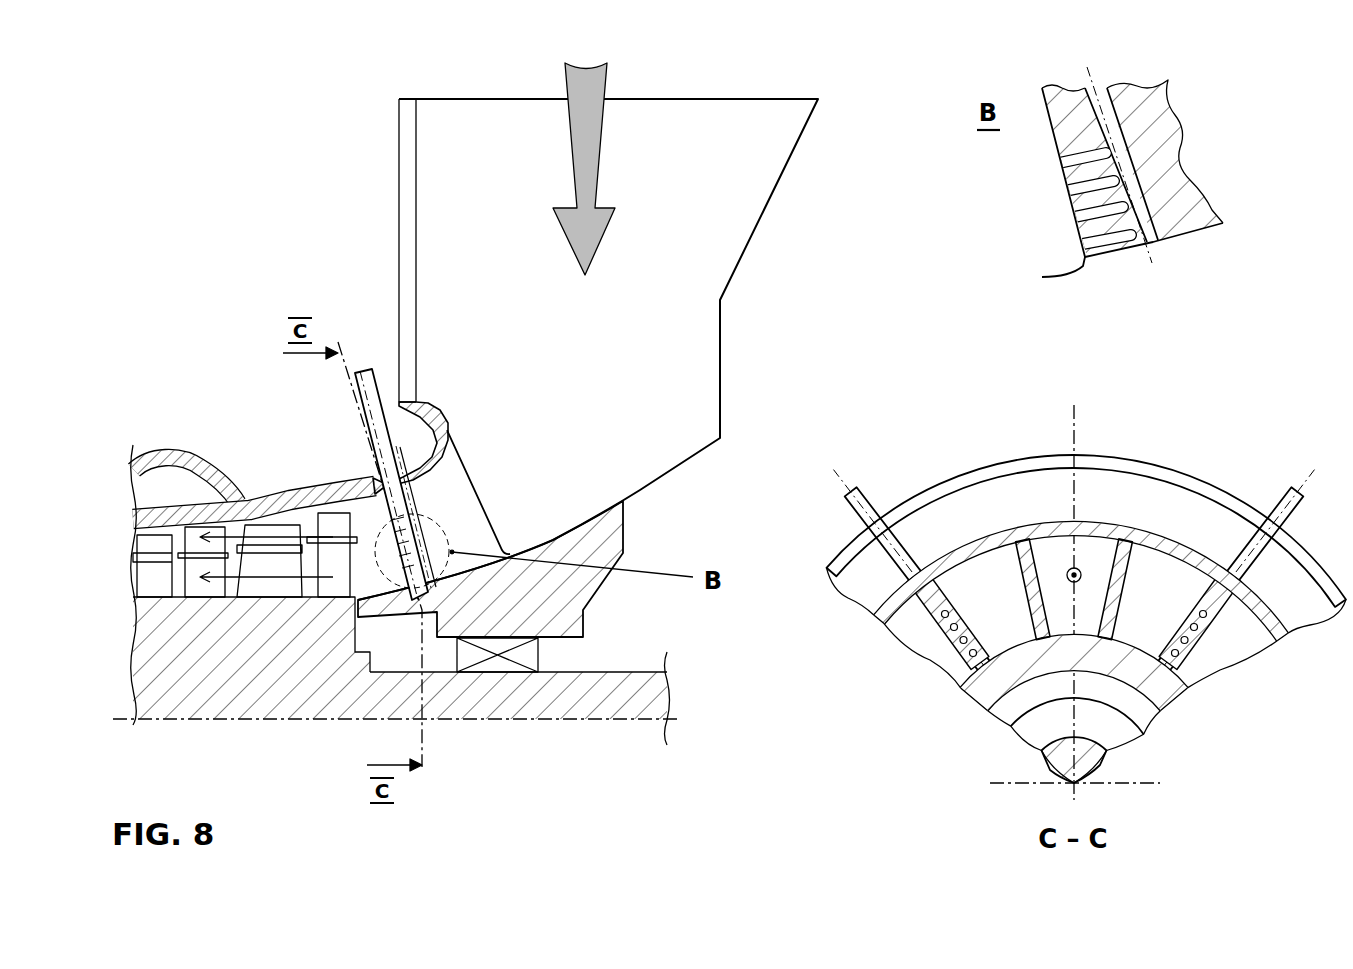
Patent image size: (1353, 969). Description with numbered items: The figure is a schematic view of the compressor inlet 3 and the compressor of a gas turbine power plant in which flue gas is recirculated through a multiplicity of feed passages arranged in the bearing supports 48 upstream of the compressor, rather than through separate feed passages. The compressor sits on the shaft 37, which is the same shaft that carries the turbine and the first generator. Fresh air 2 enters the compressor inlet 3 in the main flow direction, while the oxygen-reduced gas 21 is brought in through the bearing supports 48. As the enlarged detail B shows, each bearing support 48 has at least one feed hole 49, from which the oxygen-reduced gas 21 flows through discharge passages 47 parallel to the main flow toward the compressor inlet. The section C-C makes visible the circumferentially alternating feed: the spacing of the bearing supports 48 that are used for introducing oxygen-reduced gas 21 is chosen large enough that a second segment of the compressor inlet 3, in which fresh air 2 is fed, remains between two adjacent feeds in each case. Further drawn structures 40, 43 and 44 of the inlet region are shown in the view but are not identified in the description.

The fresh air 2 is at (1067, 567).
The compressor inlet 3 is at (770, 243).
The oxygen-reduced gas 21 is at (349, 347).
The shaft 37 is at (567, 703).
The wall 40 is at (303, 498).
The vane element 43 is at (335, 580).
The vane element 44 is at (272, 585).
The discharge passages 47 is at (1095, 217).
The bearing supports 48 is at (460, 515).
The feed hole 49 is at (408, 502).